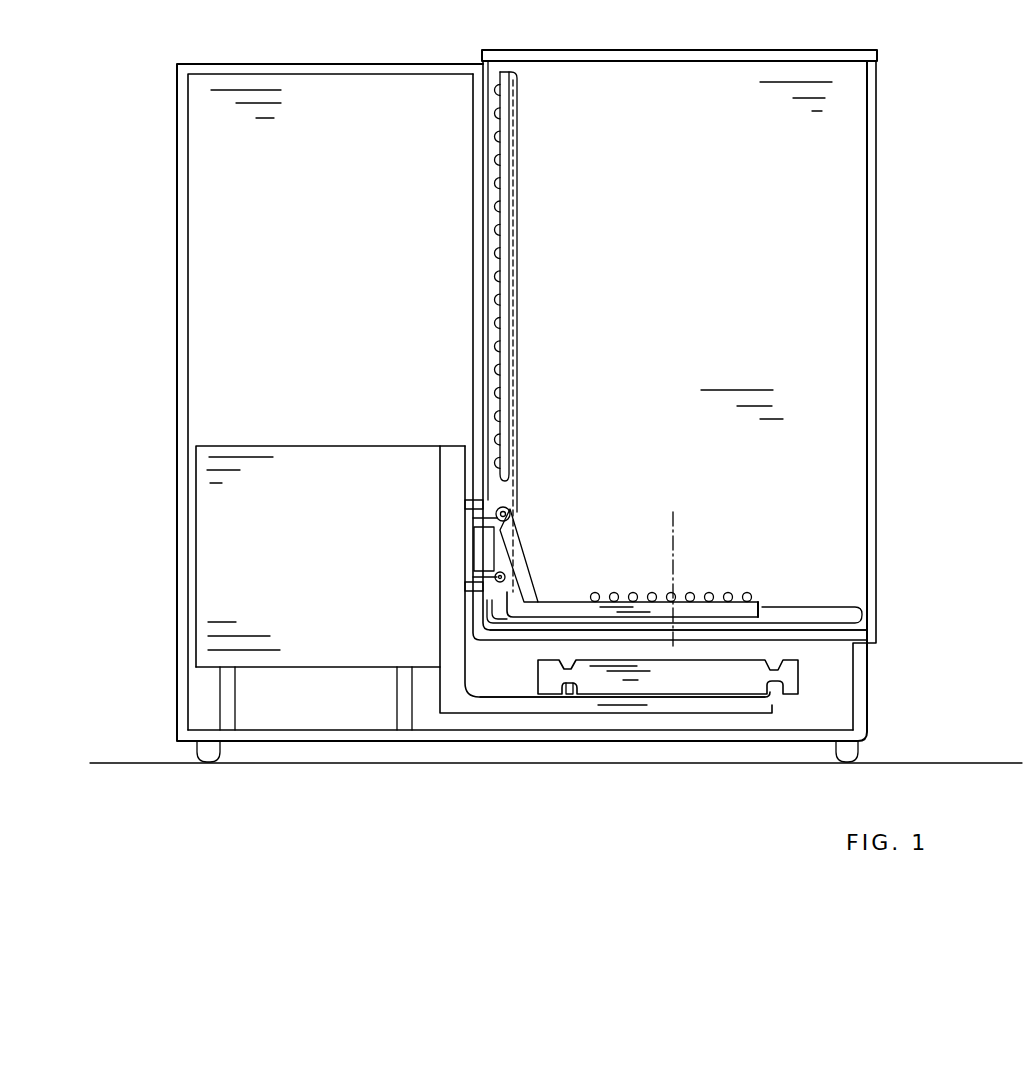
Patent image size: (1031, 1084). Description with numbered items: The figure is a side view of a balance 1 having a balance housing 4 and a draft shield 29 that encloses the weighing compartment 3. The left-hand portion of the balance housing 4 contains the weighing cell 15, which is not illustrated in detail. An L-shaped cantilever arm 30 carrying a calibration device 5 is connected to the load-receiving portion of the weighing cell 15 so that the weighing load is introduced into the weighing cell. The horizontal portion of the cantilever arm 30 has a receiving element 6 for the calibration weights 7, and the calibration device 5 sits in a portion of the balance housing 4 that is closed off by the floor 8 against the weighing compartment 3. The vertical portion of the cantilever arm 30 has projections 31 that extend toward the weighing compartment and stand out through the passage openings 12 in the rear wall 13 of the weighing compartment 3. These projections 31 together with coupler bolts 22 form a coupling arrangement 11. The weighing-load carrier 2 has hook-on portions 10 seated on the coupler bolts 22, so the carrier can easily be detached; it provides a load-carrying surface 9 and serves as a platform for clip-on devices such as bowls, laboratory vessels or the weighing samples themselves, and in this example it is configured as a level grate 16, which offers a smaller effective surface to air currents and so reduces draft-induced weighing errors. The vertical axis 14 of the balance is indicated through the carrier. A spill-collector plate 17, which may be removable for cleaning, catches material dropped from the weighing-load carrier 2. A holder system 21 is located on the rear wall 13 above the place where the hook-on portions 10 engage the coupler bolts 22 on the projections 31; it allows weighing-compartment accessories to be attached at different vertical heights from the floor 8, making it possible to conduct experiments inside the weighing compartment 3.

The balance 1 is at (932, 430).
The weighing-load carrier 2 is at (573, 599).
The weighing compartment 3 is at (689, 306).
The balance housing 4 is at (177, 421).
The calibration device 5 is at (812, 715).
The receiving element 6 is at (565, 690).
The calibration weight 7 is at (707, 675).
The floor 8 is at (856, 637).
The load-carrying surface 9 is at (705, 597).
The hook-on portions 10 is at (523, 578).
The coupling arrangement 11 is at (527, 462).
The passage openings 12 is at (465, 504).
The rear wall 13 is at (477, 239).
The vertical axis 14 is at (677, 521).
The weighing cell 15 is at (350, 628).
The grate 16 is at (751, 595).
The spill-collector plate 17 is at (843, 612).
The holder system 21 is at (513, 283).
The coupler bolts 22 is at (506, 573).
The draft shield 29 is at (871, 251).
The cantilever arm 30 is at (455, 458).
The projections 31 is at (472, 518).